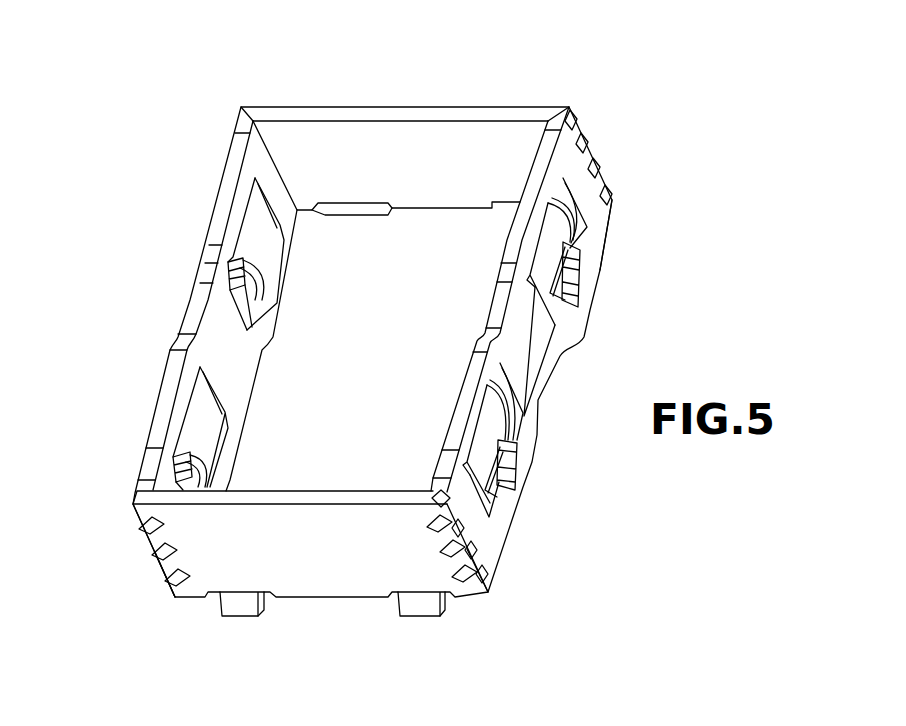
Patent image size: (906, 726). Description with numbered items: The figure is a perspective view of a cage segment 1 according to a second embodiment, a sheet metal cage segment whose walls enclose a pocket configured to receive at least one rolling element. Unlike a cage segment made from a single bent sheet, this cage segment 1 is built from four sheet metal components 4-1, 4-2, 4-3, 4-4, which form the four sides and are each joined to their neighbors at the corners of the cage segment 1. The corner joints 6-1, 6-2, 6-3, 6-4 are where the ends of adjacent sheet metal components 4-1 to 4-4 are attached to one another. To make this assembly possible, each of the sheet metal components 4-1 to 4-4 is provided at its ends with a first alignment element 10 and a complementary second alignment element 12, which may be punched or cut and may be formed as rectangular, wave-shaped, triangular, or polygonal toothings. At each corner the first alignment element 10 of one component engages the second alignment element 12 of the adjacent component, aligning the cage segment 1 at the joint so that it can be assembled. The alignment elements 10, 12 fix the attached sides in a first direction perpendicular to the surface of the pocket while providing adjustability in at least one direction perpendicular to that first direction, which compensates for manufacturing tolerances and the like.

The cage segment 1 is at (615, 82).
The sheet metal component 4-1 is at (540, 380).
The sheet metal component 4-2 is at (430, 106).
The sheet metal component 4-3 is at (228, 192).
The sheet metal component 4-4 is at (300, 583).
The joint 6-1 is at (233, 100).
The joint 6-2 is at (625, 180).
The joint 6-3 is at (492, 593).
The joint 6-4 is at (150, 588).
The first alignment element 10 is at (606, 149).
The second alignment element 12 is at (615, 209).